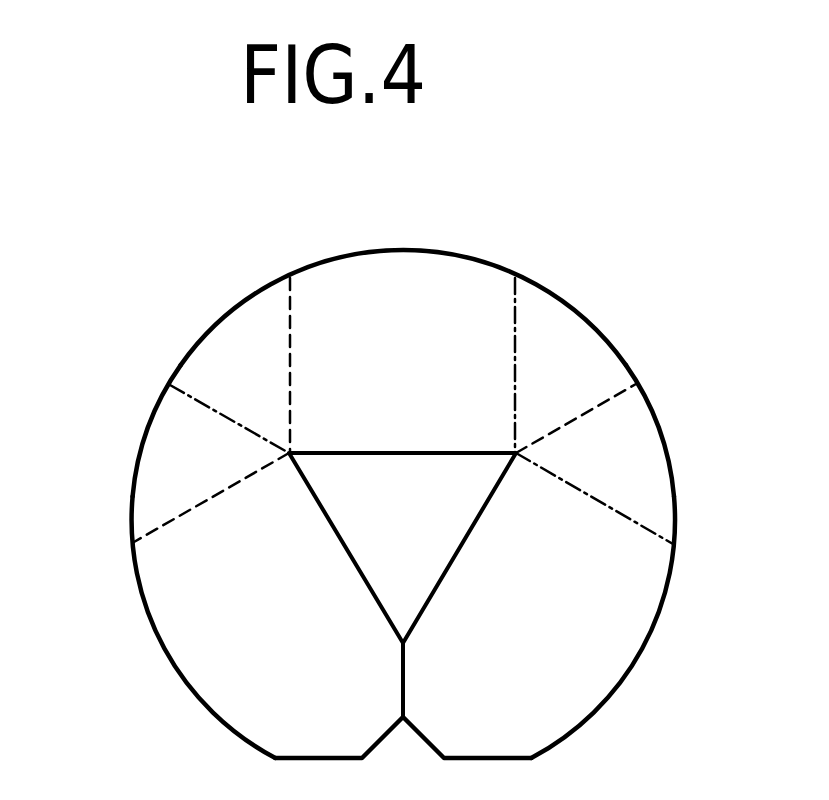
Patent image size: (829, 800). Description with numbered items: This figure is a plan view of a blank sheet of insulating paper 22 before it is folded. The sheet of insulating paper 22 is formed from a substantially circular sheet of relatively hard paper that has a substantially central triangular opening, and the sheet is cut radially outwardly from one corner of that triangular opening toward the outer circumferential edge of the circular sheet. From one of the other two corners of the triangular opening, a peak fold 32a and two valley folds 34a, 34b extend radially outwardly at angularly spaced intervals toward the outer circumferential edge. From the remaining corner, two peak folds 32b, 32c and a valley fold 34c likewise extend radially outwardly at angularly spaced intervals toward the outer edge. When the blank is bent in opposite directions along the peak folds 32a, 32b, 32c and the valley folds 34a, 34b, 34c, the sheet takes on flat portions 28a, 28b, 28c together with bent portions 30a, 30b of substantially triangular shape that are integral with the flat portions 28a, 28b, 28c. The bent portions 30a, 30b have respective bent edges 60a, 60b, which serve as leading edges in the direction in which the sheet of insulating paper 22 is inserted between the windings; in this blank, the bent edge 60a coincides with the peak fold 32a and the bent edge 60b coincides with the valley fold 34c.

The sheet of insulating paper 22 is at (407, 458).
The flat portion 28a is at (220, 685).
The flat portion 28b is at (358, 267).
The flat portion 28c is at (612, 652).
The bent portion 30a is at (167, 462).
The bent portion 30b is at (645, 440).
The peak fold 32a is at (192, 337).
The peak fold 32b is at (513, 358).
The peak fold 32c is at (543, 480).
The valley fold 34a is at (210, 500).
The valley fold 34b is at (293, 393).
The valley fold 34c is at (613, 331).
The bent edge 60a is at (235, 417).
The bent edge 60b is at (590, 412).